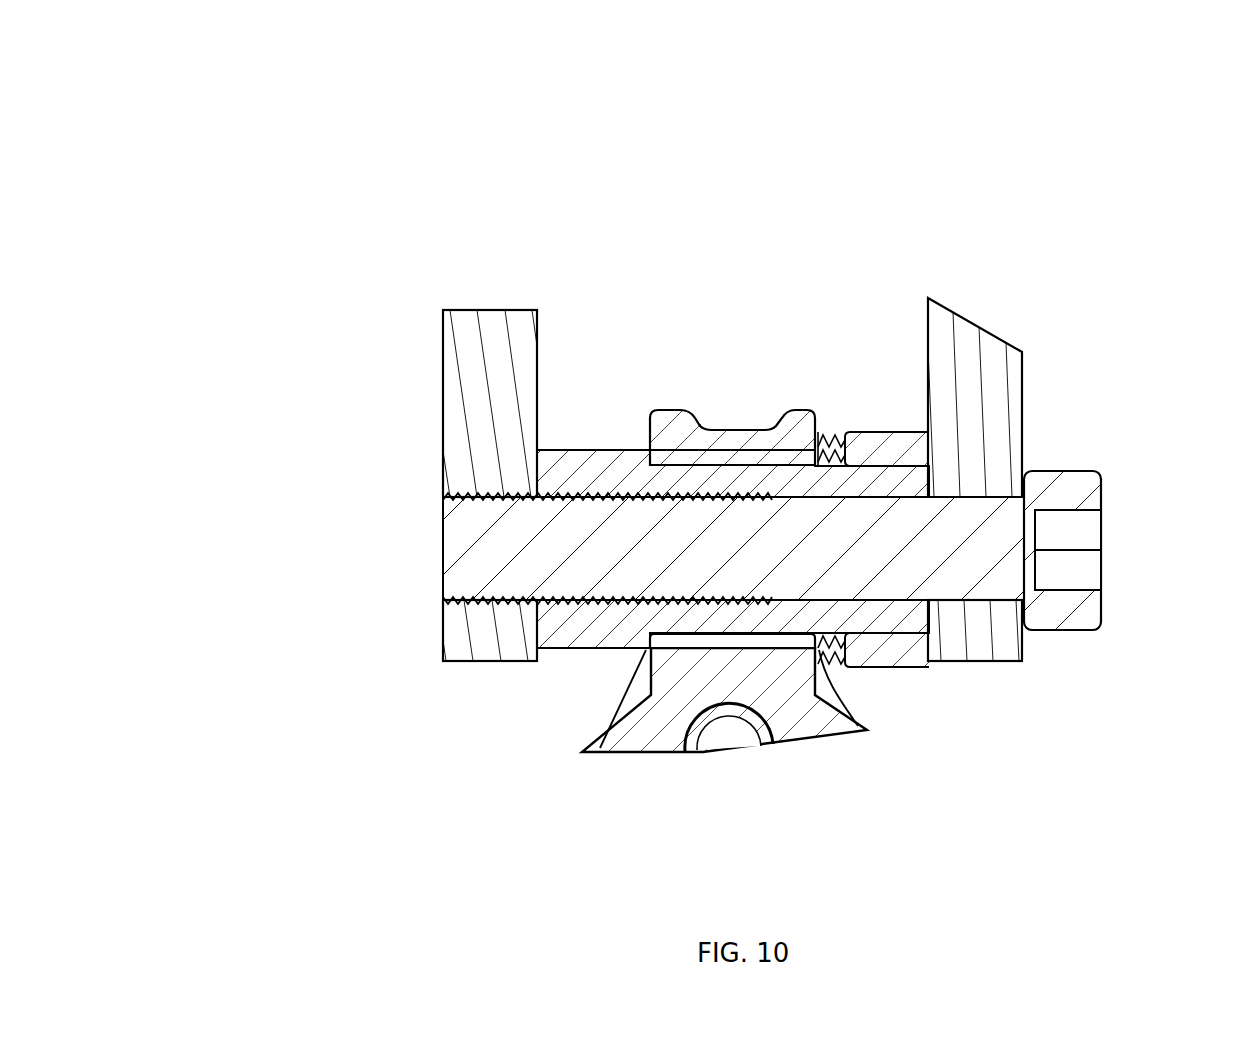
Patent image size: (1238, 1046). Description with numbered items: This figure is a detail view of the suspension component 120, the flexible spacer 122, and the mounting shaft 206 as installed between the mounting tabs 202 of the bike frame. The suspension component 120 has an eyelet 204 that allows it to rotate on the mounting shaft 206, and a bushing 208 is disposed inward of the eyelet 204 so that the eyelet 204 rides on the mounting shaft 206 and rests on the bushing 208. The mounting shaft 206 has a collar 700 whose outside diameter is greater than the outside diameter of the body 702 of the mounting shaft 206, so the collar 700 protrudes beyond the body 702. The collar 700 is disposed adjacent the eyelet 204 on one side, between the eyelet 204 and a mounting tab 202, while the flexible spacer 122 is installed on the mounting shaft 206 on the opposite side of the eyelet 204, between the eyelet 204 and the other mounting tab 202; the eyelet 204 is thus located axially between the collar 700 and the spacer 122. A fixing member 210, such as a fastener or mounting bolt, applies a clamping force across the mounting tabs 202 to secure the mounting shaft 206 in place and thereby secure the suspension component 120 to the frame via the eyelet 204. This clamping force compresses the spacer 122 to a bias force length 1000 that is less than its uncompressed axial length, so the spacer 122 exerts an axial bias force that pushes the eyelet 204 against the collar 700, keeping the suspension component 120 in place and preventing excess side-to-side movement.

The bias force length 1000 is at (816, 405).
The mounting tab 202 is at (442, 340).
The eyelet 204 is at (720, 430).
The mounting shaft 206 is at (782, 487).
The flexible spacer 122 is at (885, 432).
The collar 700 is at (585, 450).
The fixing member 210 is at (1102, 492).
The bushing 208 is at (698, 643).
The body 702 is at (850, 617).
The suspension component 120 is at (673, 712).